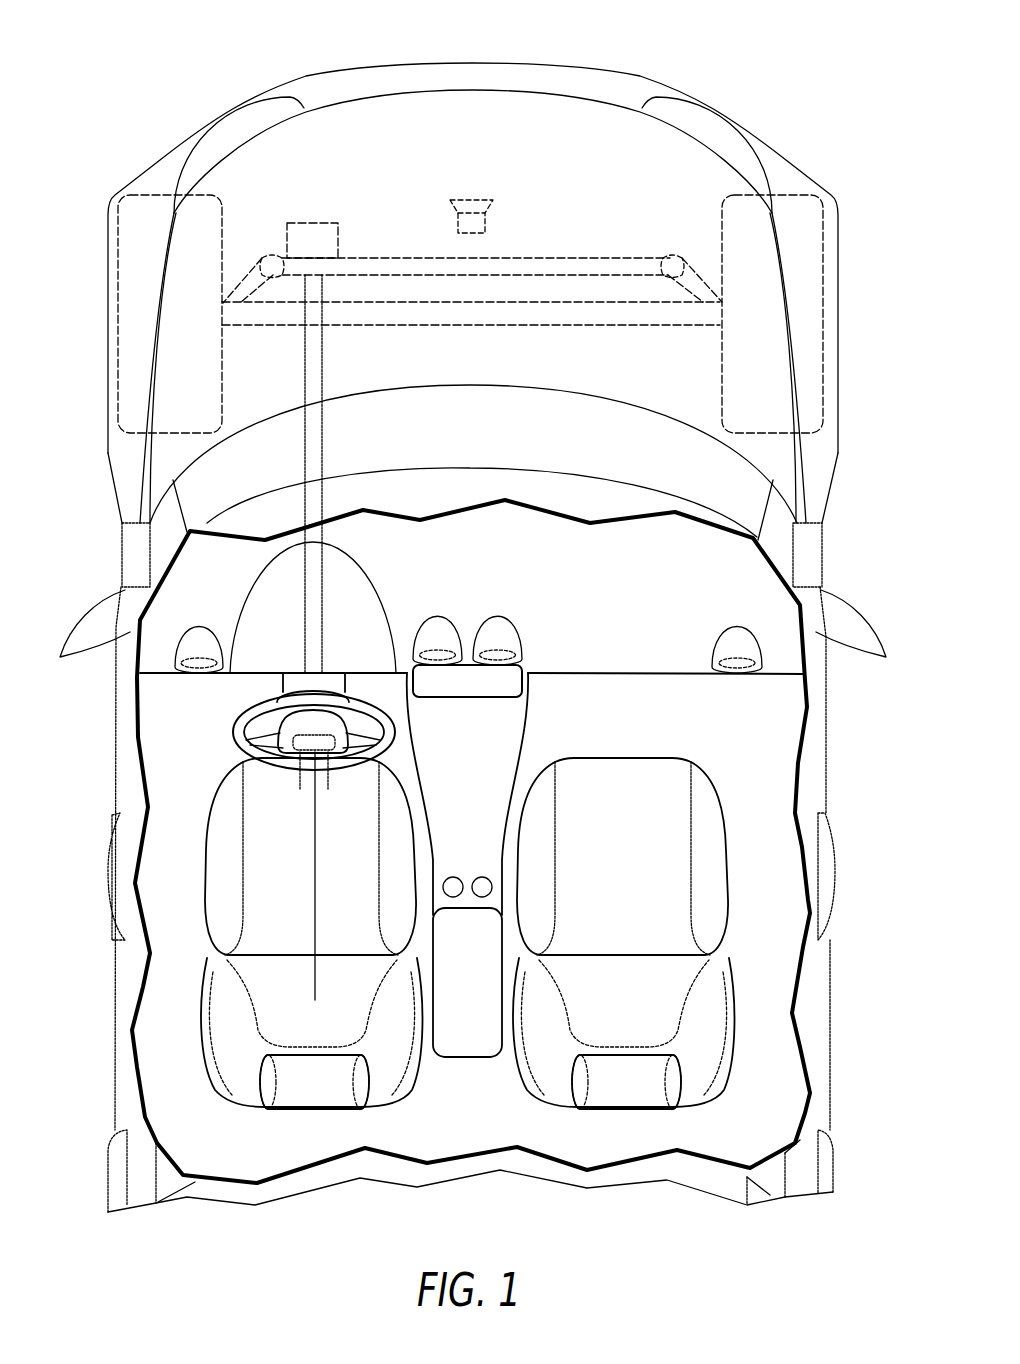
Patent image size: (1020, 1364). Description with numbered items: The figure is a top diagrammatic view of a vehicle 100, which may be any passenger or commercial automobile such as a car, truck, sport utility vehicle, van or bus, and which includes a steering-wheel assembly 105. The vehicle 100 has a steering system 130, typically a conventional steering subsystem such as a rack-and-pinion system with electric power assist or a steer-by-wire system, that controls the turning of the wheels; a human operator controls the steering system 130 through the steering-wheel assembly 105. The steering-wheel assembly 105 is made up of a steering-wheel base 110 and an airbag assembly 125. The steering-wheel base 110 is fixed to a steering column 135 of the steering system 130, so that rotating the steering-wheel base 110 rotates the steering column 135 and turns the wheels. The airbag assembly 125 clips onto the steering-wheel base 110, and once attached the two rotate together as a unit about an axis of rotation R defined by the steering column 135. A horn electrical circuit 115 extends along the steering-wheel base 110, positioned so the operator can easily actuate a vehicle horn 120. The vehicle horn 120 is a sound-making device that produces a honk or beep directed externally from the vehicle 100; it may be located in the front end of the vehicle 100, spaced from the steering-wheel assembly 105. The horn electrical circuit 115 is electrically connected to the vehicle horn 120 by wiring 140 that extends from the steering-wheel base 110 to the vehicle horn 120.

The vehicle 100 is at (797, 62).
The steering-wheel assembly 105 is at (219, 743).
The steering-wheel base 110 is at (307, 703).
The horn electrical circuit 115 is at (300, 752).
The vehicle horn 120 is at (318, 742).
The airbag assembly 125 is at (308, 755).
The steering system 130 is at (636, 233).
The steering column 135 is at (300, 442).
The wiring 140 is at (425, 402).